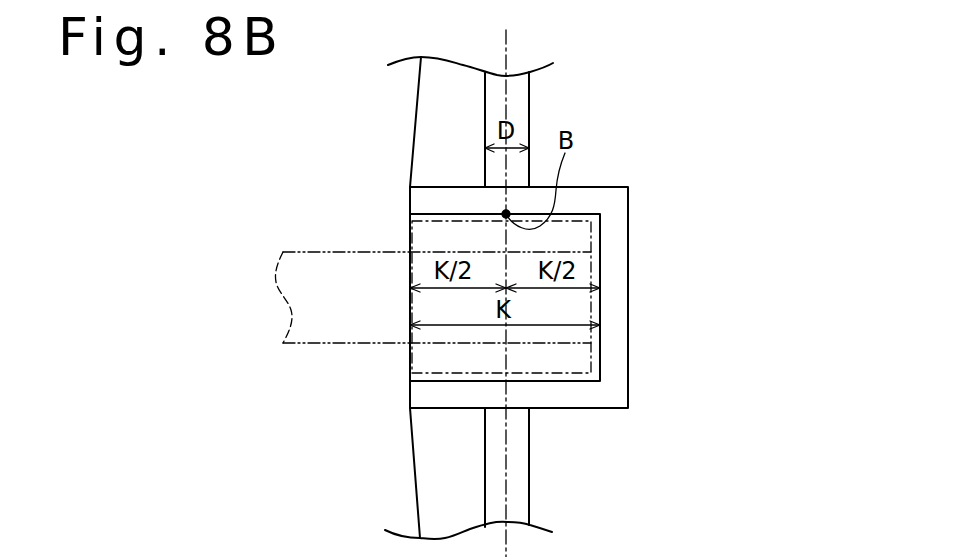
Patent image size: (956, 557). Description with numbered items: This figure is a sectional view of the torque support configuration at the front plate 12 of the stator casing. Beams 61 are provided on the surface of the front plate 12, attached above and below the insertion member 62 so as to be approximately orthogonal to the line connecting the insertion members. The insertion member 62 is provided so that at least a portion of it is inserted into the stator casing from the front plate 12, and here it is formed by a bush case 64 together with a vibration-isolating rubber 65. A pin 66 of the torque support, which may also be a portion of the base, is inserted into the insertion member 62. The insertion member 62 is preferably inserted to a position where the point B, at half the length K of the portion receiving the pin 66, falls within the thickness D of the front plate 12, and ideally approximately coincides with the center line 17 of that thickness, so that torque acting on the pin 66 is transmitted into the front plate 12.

The front plate 12 is at (485, 108).
The center line 17 is at (506, 47).
The beam 61 is at (420, 126).
The insertion member 62 is at (716, 242).
The bush case 64 is at (622, 353).
The vibration-isolating rubber 65 is at (413, 237).
The pin 66 is at (320, 343).